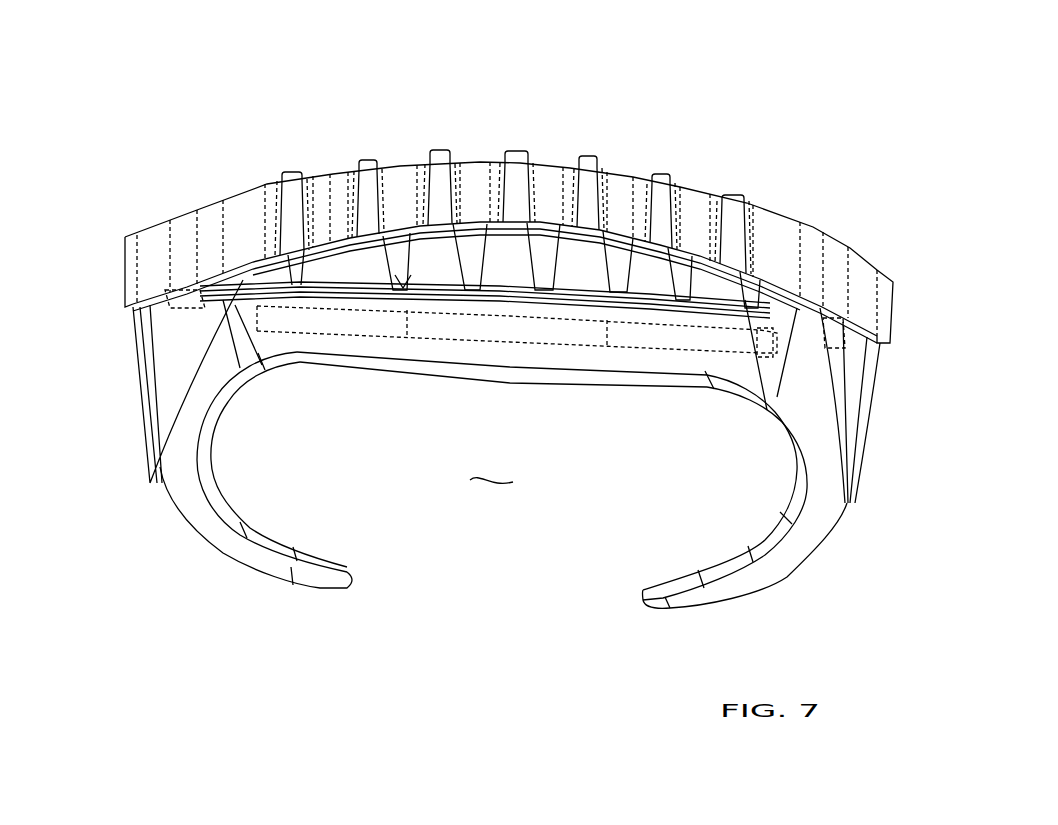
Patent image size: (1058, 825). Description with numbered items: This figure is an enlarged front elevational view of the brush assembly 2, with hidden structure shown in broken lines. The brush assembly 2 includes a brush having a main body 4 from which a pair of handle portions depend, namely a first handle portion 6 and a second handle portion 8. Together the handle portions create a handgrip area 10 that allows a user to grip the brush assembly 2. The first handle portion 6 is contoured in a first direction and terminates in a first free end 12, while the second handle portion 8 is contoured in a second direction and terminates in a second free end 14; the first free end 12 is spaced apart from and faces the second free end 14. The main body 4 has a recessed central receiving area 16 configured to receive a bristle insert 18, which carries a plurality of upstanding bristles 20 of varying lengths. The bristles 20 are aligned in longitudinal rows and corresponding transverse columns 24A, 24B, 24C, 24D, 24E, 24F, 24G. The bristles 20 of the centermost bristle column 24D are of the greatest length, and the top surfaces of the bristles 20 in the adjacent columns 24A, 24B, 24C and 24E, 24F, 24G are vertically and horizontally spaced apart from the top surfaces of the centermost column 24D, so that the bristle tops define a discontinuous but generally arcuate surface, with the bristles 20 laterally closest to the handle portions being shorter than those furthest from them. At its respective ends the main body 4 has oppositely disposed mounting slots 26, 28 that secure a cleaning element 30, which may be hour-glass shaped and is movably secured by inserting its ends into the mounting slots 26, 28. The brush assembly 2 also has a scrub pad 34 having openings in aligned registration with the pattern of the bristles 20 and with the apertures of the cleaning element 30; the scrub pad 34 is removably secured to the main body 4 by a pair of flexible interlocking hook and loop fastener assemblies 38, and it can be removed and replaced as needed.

The brush assembly 2 is at (838, 124).
The main body 4 is at (848, 407).
The first handle portion 6 is at (140, 472).
The second handle portion 8 is at (858, 504).
The handgrip area 10 is at (493, 497).
The first free end 12 is at (317, 587).
The second free end 14 is at (663, 598).
The recessed central receiving area 16 is at (573, 310).
The bristle insert 18 is at (403, 285).
The bristles 20 is at (593, 258).
The transverse bristle column 24A is at (283, 180).
The transverse bristle column 24B is at (365, 147).
The transverse bristle column 24C is at (457, 145).
The centermost bristle column 24D is at (527, 147).
The transverse bristle column 24E is at (600, 147).
The transverse bristle column 24F is at (680, 173).
The transverse bristle column 24G is at (747, 193).
The mounting slot 26 is at (130, 294).
The mounting slot 28 is at (855, 305).
The cleaning element 30 is at (330, 245).
The scrub pad 34 is at (220, 220).
The hook and loop fastener assembly 38 is at (207, 285).